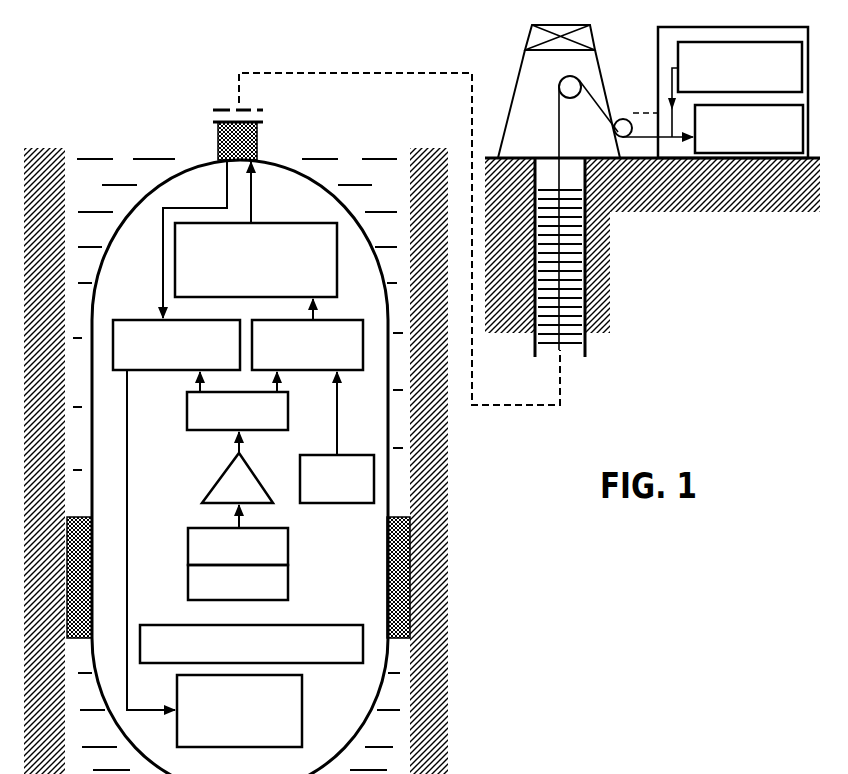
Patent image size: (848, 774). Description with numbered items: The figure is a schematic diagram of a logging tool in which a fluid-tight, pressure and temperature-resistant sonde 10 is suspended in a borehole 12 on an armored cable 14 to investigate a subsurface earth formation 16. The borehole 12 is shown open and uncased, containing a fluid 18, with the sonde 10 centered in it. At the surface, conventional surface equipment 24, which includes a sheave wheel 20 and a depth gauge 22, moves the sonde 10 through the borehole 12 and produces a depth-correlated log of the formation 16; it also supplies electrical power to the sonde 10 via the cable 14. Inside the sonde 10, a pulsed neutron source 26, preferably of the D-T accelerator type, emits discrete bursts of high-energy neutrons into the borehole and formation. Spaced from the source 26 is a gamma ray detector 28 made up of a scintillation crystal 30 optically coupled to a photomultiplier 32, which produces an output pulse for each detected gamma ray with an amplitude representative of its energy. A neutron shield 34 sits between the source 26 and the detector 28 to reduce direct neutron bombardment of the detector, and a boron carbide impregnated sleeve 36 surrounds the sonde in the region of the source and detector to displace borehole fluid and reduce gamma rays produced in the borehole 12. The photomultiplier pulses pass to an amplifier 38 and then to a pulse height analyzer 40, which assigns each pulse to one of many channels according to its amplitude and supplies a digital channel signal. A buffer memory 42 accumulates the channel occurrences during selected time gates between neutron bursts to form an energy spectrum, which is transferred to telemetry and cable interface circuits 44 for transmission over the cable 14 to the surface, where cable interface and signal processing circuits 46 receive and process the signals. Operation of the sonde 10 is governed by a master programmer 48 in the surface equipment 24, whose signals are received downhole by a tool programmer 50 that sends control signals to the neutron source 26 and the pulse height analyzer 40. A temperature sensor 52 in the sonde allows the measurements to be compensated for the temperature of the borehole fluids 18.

The sonde 10 is at (388, 478).
The borehole 12 is at (374, 727).
The armored cable 14 is at (218, 140).
The subsurface earth formation 16 is at (427, 625).
The fluid 18 is at (383, 760).
The sheave wheel 20 is at (566, 80).
The depth gauge 22 is at (619, 118).
The surface equipment 24 is at (678, 158).
The pulsed neutron source 26 is at (290, 708).
The gamma ray detector 28 is at (182, 562).
The scintillation crystal 30 is at (288, 583).
The photomultiplier 32 is at (272, 550).
The neutron shield 34 is at (192, 633).
The boron carbide impregnated sleeve 36 is at (418, 555).
The amplifier 38 is at (232, 482).
The pulse height analyzer 40 is at (196, 418).
The buffer memory 42 is at (318, 370).
The telemetry and cable interface circuits 44 is at (307, 220).
The cable interface and signal processing circuits 46 is at (785, 145).
The master programmer 48 is at (663, 46).
The tool programmer 50 is at (141, 330).
The temperature sensor 52 is at (363, 455).